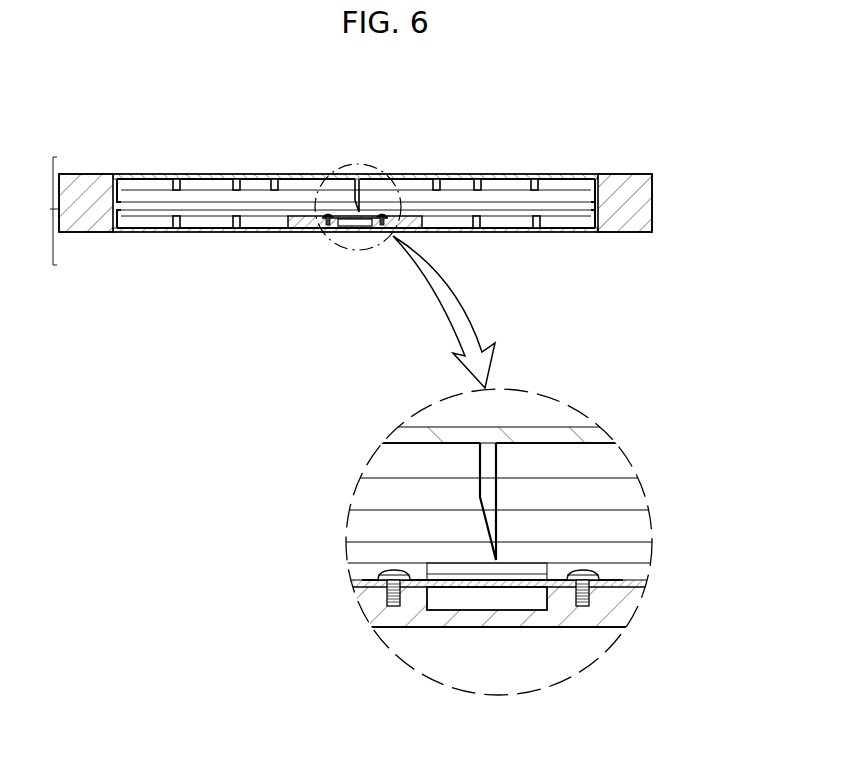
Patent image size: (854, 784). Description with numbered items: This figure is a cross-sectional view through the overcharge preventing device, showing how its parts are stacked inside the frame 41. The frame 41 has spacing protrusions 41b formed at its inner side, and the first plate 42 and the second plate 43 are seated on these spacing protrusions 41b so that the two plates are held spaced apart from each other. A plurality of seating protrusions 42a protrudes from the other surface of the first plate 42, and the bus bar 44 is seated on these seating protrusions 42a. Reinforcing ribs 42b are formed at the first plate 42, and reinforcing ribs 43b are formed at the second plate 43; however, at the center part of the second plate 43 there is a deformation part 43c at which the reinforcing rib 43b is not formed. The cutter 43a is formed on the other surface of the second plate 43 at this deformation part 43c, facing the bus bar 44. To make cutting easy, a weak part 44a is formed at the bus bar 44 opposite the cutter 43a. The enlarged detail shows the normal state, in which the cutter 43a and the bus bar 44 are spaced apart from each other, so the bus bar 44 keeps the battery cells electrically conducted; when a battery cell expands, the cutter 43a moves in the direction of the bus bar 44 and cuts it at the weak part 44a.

The frame 41 is at (638, 213).
The spacing protrusions 41b is at (567, 205).
The first plate 42 is at (482, 230).
The seating protrusions 42a is at (297, 230).
The reinforcing rib 42b is at (225, 230).
The second plate 43 is at (446, 180).
The cutter 43a is at (359, 182).
The reinforcing rib 43b is at (176, 178).
The deformation part 43c is at (310, 177).
The bus bar 44 is at (363, 583).
The weak part 44a is at (503, 583).